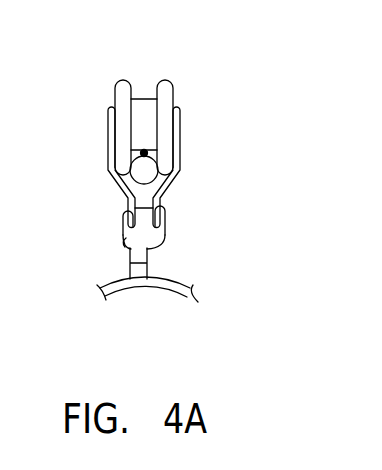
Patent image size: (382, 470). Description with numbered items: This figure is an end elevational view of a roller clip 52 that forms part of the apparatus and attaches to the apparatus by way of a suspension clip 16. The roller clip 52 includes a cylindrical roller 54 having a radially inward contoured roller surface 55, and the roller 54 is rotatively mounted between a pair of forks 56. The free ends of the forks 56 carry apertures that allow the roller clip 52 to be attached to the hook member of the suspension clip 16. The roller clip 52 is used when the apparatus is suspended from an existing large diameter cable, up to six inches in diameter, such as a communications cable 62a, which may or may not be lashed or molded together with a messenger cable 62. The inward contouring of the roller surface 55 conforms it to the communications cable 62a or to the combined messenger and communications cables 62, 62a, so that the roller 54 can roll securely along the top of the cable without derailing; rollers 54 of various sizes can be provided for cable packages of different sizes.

The suspension clip 16 is at (163, 220).
The roller clip 52 is at (178, 89).
The cylindrical roller 54 is at (118, 97).
The roller surface 55 is at (143, 98).
The forks 56 is at (183, 126).
The messenger cable 62 is at (148, 155).
The communications cable 62a is at (140, 173).